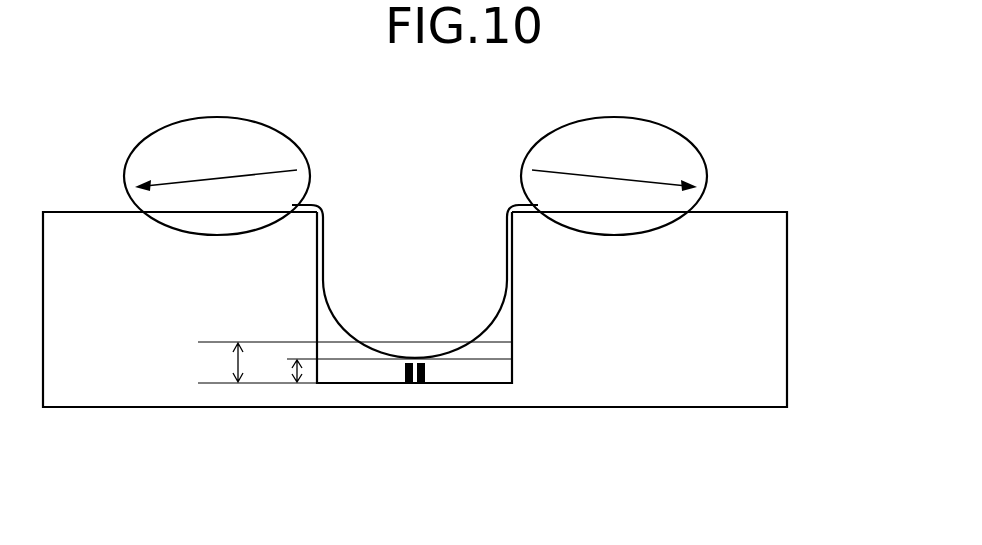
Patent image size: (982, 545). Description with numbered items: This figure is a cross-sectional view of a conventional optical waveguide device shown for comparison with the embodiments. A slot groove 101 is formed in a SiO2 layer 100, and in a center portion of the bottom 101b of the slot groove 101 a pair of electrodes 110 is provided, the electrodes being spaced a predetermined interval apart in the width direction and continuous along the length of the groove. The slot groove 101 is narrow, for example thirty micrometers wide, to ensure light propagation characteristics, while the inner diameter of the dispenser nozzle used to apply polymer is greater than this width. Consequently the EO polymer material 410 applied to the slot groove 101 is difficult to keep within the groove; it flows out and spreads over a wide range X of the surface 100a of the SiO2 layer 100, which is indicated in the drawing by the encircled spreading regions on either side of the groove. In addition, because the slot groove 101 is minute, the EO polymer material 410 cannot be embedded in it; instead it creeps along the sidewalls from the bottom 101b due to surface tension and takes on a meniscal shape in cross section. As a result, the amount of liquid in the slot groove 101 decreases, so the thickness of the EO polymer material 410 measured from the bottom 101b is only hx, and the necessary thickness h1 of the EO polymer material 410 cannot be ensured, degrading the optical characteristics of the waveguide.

The SiO2 layer 100 is at (778, 278).
The surface of SiO2 layer 100a is at (725, 220).
The slot groove 101 is at (425, 225).
The bottom of slot groove 101b is at (463, 385).
The pair of electrodes 110 is at (409, 383).
The EO polymer material 410 is at (473, 360).
The necessary thickness of EO polymer material h1 is at (253, 363).
The thickness of EO polymer material from groove bottom hx is at (308, 370).
The spreading range X is at (650, 120).